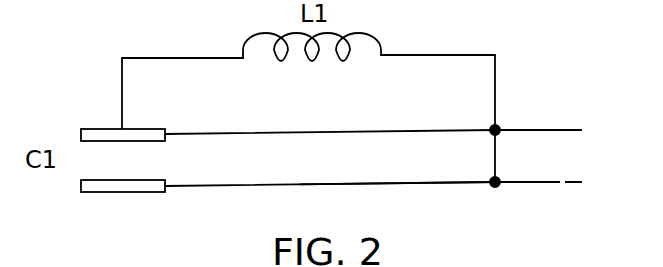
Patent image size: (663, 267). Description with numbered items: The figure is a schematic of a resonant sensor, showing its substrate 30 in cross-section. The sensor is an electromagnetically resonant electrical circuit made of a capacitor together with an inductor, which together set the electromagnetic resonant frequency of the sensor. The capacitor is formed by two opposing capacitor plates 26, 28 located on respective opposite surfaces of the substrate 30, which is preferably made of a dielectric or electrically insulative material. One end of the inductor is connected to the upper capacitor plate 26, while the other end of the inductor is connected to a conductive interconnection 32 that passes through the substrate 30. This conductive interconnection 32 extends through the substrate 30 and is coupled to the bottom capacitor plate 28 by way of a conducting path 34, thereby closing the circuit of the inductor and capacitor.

The capacitor plate 26 is at (99, 128).
The capacitor plate 28 is at (109, 193).
The substrate 30 is at (338, 172).
The conductive interconnection 32 is at (497, 158).
The conducting path 34 is at (403, 184).